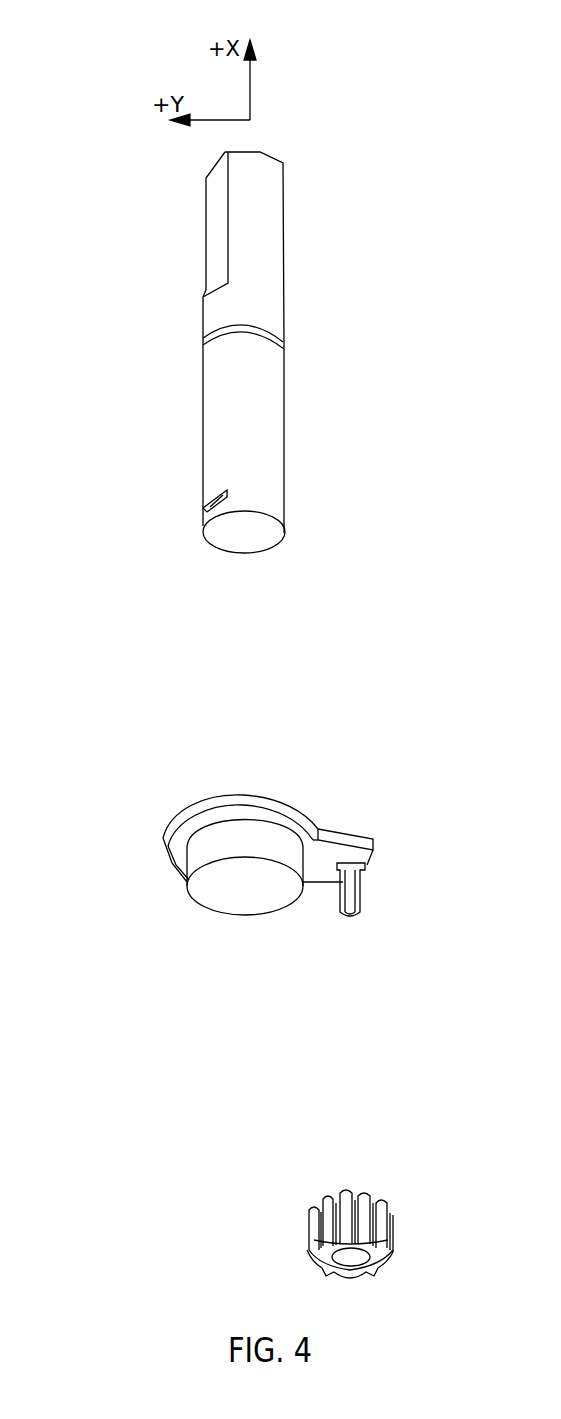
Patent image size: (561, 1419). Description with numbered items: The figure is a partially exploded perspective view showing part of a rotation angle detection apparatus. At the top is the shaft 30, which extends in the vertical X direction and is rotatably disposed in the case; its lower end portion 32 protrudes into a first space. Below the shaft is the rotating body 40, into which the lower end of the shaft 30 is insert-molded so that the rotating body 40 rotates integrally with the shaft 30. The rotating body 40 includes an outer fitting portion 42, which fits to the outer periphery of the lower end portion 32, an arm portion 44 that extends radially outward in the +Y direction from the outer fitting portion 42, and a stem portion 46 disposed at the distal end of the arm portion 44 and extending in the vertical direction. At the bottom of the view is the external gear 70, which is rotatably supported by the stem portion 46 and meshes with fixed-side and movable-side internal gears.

The shaft 30 is at (291, 352).
The lower end portion 32 is at (275, 481).
The rotating body 40 is at (217, 895).
The outer fitting portion 42 is at (253, 855).
The arm portion 44 is at (312, 880).
The stem portion 46 is at (352, 918).
The external gear 70 is at (393, 1230).